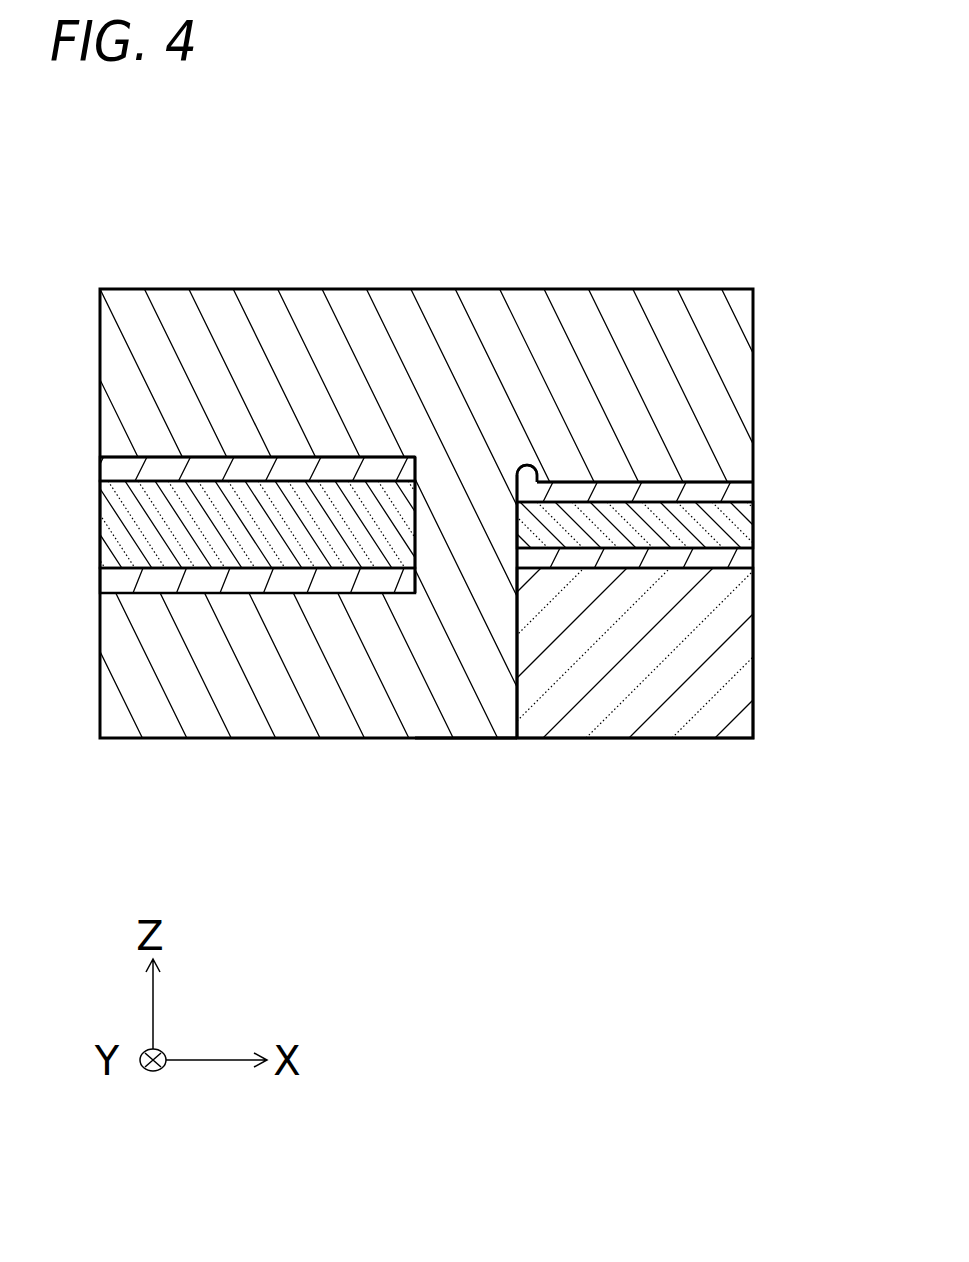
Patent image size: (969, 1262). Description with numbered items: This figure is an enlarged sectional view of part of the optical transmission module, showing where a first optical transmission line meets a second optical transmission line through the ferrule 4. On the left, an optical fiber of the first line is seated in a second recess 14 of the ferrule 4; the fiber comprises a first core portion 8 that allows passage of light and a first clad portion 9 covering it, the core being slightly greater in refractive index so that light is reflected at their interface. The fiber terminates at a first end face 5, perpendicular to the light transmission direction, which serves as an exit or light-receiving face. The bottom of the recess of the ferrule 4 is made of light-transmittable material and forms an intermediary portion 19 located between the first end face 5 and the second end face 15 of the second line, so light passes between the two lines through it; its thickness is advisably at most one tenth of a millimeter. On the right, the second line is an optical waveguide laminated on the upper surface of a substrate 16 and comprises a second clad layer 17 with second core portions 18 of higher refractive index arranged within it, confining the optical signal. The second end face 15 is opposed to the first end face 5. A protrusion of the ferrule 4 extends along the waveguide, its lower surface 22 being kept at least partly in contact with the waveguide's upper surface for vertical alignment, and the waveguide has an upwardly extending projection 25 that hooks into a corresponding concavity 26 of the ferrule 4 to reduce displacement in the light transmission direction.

The ferrule 4 is at (368, 353).
The first clad portion 9 is at (156, 468).
The first core portion 8 is at (165, 537).
The second recess 14 is at (272, 443).
The first end face 5 is at (428, 495).
The second clad layer 17 is at (700, 490).
The second core portion 18 is at (697, 532).
The substrate 16 is at (652, 657).
The projection 25 is at (537, 450).
The concavity 26 is at (527, 473).
The second end face 15 is at (506, 543).
The lower surface 22 is at (572, 498).
The intermediary portion 19 is at (426, 591).